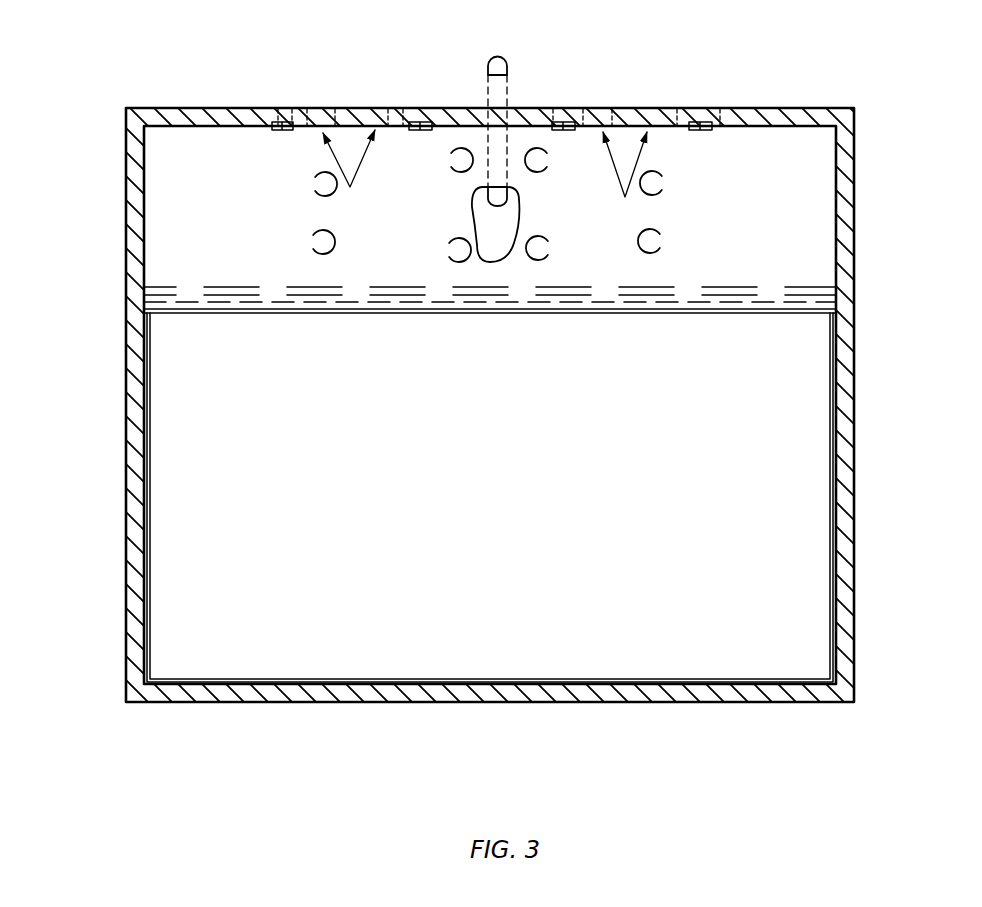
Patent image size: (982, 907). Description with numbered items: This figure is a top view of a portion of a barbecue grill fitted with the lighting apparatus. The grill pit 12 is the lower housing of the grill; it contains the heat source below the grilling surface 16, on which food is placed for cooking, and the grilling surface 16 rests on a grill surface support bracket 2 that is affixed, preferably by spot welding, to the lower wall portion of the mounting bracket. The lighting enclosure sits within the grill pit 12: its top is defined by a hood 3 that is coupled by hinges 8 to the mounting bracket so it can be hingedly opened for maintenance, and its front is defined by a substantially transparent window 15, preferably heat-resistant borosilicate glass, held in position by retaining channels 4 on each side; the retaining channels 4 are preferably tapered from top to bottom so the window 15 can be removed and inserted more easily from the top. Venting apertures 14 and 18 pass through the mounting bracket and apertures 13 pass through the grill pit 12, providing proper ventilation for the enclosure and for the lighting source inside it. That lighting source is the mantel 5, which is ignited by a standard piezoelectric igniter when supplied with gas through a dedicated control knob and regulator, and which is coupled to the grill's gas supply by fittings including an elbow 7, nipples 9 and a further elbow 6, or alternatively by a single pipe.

The grill surface support bracket 2 is at (293, 316).
The hood 3 is at (147, 236).
The retaining channels 4 is at (150, 284).
The mantel 5 is at (470, 209).
The elbow 6 is at (505, 202).
The elbow 7 is at (505, 54).
The hinges 8 is at (417, 108).
The nipples 9 is at (497, 131).
The grill pit 12 is at (780, 104).
The apertures 13 is at (314, 188).
The venting apertures 14 is at (447, 164).
The window 15 is at (405, 285).
The grilling surface 16 is at (212, 316).
The venting apertures 18 is at (350, 187).